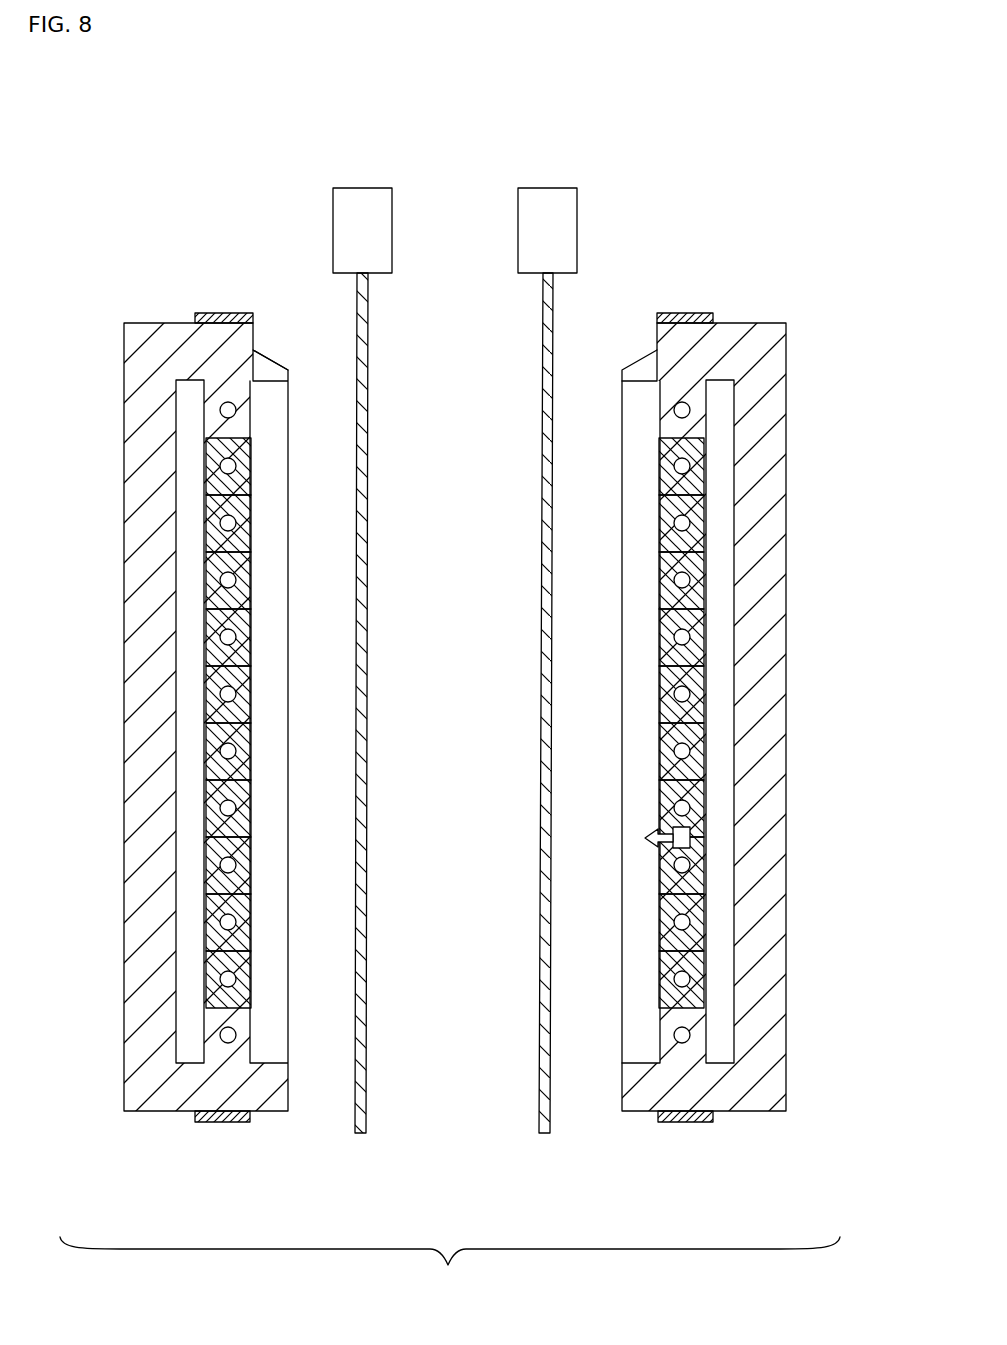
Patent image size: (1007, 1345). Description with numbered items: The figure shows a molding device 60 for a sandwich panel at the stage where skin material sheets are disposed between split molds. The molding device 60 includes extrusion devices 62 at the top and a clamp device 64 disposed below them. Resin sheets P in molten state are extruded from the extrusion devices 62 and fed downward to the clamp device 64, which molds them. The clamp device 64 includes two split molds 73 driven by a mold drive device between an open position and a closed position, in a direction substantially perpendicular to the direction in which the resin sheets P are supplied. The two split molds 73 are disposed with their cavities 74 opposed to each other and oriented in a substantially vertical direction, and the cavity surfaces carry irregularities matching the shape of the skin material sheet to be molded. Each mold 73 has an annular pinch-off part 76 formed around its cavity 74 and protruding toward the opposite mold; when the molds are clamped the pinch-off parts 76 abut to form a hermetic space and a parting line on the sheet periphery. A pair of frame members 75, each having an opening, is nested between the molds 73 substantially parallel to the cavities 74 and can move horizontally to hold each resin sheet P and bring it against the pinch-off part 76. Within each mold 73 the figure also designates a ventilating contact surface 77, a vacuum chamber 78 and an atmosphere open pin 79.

The molding device 60 is at (623, 149).
The extrusion device 62 is at (343, 226).
The clamp device 64 is at (800, 457).
The split mold 73 is at (142, 576).
The cavity 74 is at (230, 637).
The frame member 75 is at (222, 312).
The pinch-off part 76 is at (290, 372).
The ventilating contact surface 77 is at (207, 862).
The vacuum chamber 78 is at (190, 760).
The atmosphere open pin 79 is at (690, 851).
The resin sheet P is at (358, 1134).